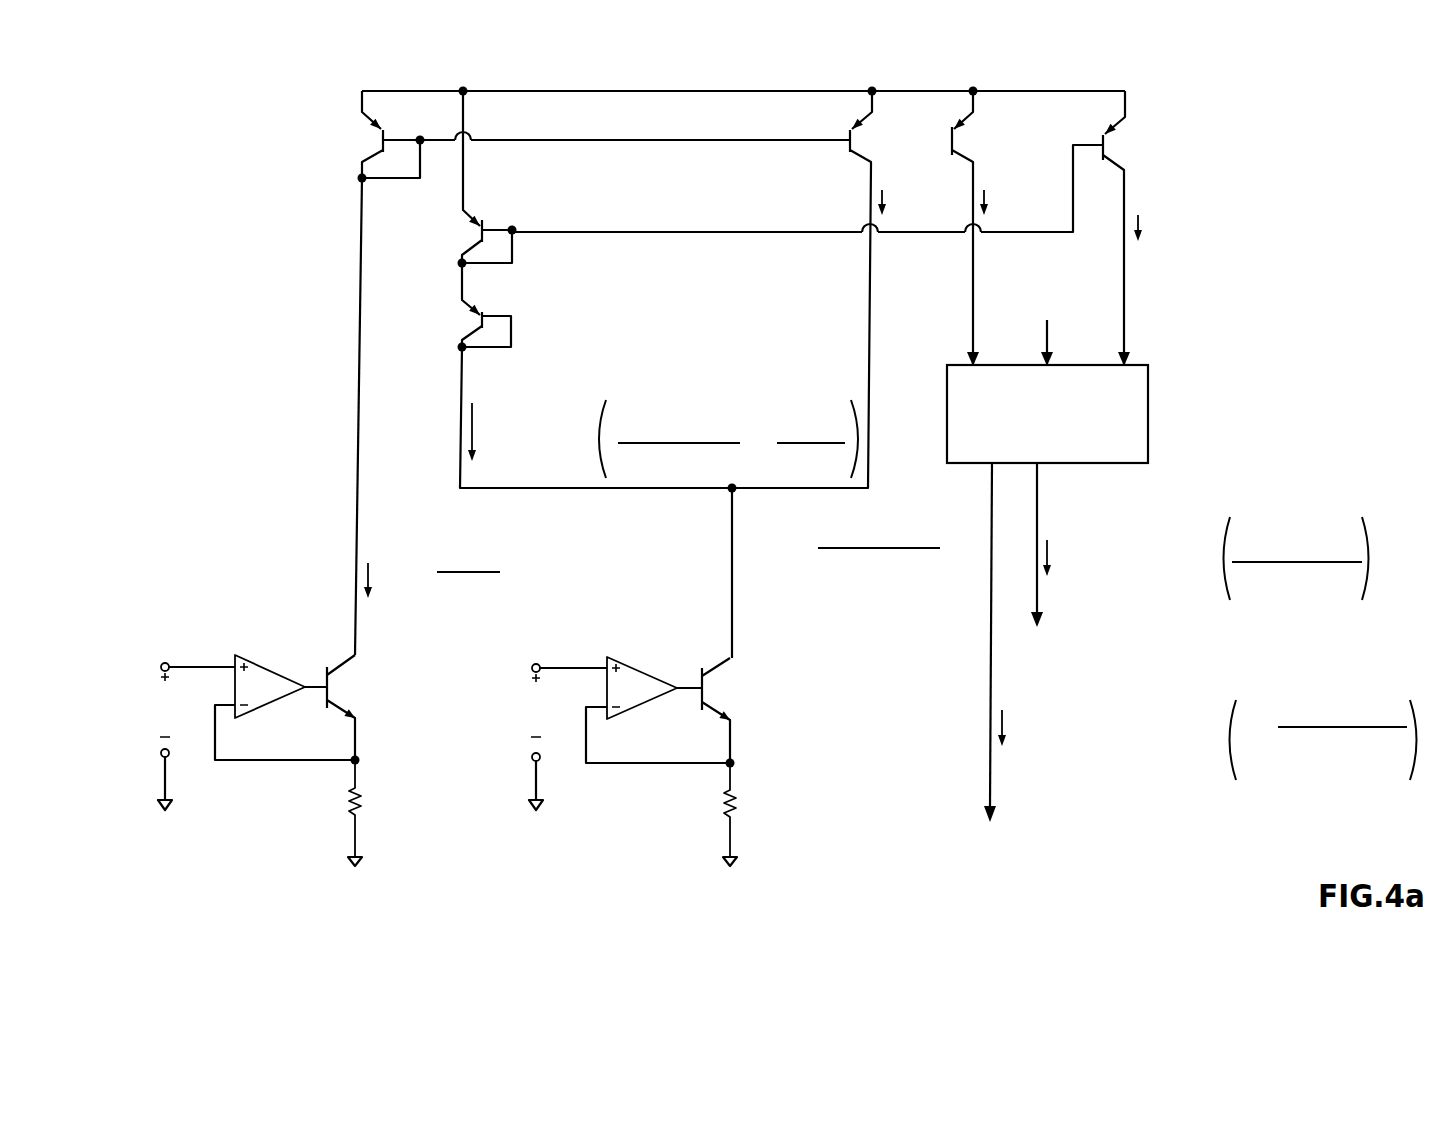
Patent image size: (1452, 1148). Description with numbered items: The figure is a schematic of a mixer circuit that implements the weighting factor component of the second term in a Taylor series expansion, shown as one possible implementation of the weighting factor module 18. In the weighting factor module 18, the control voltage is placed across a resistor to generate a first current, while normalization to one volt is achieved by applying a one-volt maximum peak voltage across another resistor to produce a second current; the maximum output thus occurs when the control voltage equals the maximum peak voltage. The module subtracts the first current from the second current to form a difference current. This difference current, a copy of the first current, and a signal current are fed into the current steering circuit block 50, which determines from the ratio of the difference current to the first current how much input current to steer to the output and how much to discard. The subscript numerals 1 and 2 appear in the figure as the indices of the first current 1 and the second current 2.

The weighting factor module 18 is at (285, 278).
The current steering circuit block 50 is at (1148, 397).
The current I1 path 1 is at (372, 225).
The current I2 path 2 is at (745, 535).